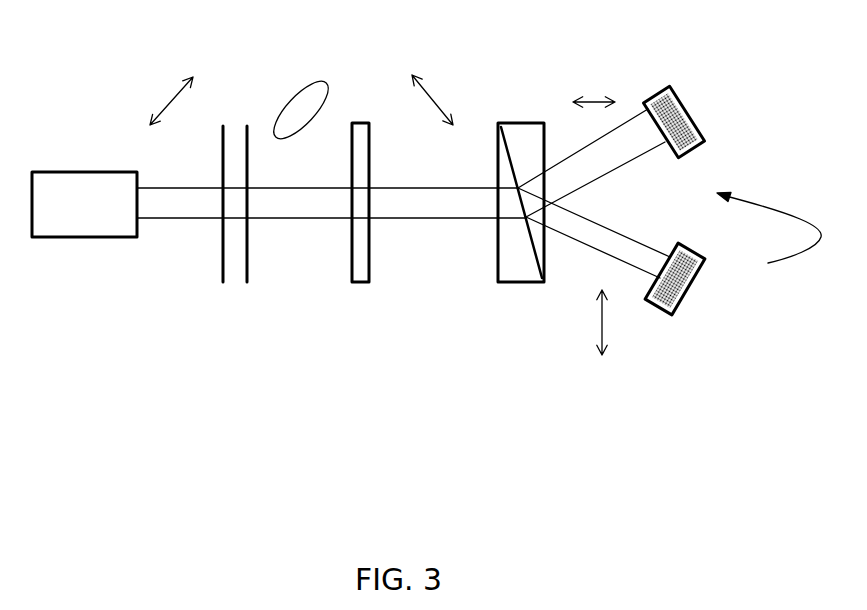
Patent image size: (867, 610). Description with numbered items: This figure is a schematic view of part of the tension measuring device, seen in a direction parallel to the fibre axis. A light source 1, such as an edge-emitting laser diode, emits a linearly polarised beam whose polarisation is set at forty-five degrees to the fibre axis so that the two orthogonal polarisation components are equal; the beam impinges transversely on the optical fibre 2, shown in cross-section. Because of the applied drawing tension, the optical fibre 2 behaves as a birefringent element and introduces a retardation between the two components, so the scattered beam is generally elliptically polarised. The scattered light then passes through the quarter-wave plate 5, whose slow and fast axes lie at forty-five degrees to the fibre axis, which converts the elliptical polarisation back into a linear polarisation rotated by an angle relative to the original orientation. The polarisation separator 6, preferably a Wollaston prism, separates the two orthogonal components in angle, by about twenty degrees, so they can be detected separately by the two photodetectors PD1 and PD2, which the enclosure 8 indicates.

The light source 1 is at (83, 171).
The optical fibre 2 is at (230, 117).
The quarter-wave plate 5 is at (362, 120).
The polarisation separator 6 is at (518, 123).
The enclosure 8 is at (769, 223).
The photodetector PD1 is at (701, 121).
The photodetector PD2 is at (698, 279).